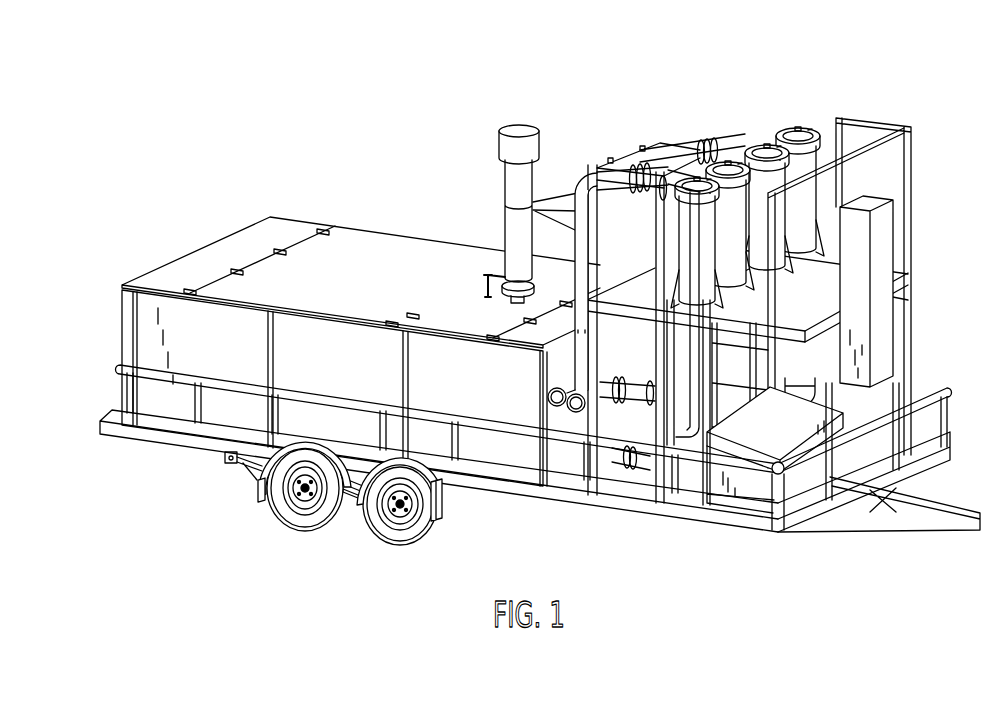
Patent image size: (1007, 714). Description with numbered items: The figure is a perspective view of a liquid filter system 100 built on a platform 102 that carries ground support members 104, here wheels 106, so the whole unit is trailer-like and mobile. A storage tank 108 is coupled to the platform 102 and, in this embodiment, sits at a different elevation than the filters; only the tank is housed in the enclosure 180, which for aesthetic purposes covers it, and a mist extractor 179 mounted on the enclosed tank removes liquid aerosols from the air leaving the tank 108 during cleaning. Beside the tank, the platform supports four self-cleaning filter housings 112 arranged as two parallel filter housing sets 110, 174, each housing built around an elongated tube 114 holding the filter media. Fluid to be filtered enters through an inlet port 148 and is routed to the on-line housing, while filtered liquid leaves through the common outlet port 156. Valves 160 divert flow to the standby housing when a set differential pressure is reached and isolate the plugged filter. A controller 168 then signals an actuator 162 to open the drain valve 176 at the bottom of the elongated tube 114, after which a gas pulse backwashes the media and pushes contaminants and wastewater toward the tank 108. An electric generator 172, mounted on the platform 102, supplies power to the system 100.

The liquid filter system 100 is at (540, 323).
The platform 102 is at (553, 497).
The ground support members 104 is at (316, 514).
The wheels 106 is at (283, 513).
The tank 108 is at (357, 371).
The filter housing set 110 is at (730, 323).
The filter housings 112 is at (761, 222).
The elongated tube 114 is at (663, 162).
The inlet port 148 is at (547, 408).
The common outlet port 156 is at (567, 413).
The valves 160 is at (703, 148).
The actuator 162 is at (716, 142).
The controller 168 is at (883, 320).
The electric generator 172 is at (753, 490).
The filter housing set 174 is at (672, 272).
The drain valve 176 is at (640, 467).
The mist extractor 179 is at (513, 183).
The enclosure 180 is at (270, 230).